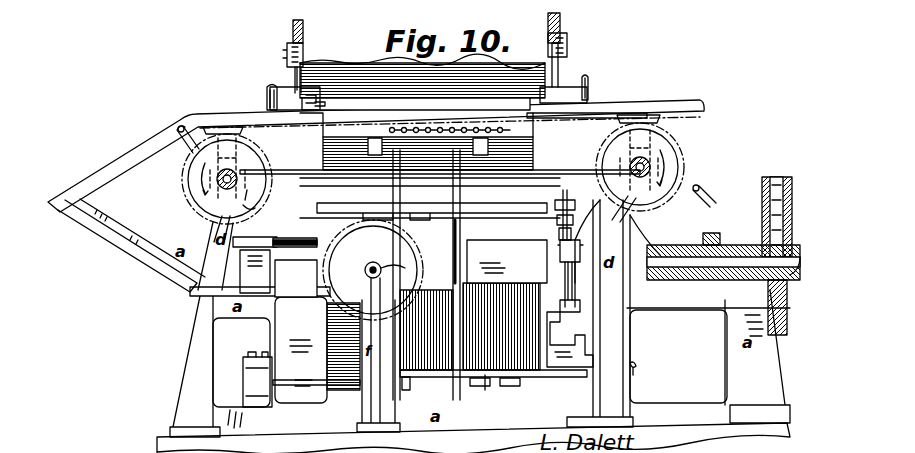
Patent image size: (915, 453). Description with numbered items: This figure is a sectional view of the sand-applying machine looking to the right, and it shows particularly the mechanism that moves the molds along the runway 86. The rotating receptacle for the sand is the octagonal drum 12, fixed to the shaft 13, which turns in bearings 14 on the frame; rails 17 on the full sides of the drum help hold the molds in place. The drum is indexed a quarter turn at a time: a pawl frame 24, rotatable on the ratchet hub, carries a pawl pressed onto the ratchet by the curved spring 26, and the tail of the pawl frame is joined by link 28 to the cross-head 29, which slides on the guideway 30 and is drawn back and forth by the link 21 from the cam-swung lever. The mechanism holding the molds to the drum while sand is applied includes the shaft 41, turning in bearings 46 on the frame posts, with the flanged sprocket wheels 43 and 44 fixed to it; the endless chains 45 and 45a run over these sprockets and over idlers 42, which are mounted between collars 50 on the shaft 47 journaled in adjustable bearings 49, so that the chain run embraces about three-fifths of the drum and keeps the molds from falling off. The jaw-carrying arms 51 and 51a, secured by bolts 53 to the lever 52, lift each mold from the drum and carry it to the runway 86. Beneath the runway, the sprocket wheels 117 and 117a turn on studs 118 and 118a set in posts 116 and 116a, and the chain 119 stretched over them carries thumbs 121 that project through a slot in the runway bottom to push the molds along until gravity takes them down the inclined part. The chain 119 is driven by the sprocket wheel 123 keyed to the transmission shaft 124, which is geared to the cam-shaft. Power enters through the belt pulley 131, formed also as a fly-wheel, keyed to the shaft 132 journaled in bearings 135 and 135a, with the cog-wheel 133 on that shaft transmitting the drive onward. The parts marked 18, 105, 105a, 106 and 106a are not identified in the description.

The drum 12 is at (530, 150).
The shaft 13 is at (295, 260).
The bearings 14 is at (273, 237).
The rails 17 is at (454, 254).
The roller 18 is at (422, 82).
The link 21 is at (578, 298).
The pawl frame 24 is at (562, 203).
The curved spring 26 is at (568, 205).
The link 28 is at (560, 262).
The cross-head 29 is at (561, 302).
The guideway 30 is at (570, 339).
The shaft 41 is at (288, 172).
The idlers 42 is at (470, 407).
The flanged sprocket wheel 43 is at (401, 200).
The flanged sprocket wheel 44 is at (461, 200).
The endless chain 45 is at (356, 249).
The endless chain 45a is at (461, 232).
The bearings 46 is at (610, 150).
The shaft 47 is at (506, 387).
The adjustable bearings 49 is at (246, 378).
The collars 50 is at (485, 388).
The arm 51 is at (294, 88).
The arm 51a is at (549, 30).
The lever 52 is at (304, 33).
The bolts 53 is at (288, 56).
The runway 86 is at (197, 122).
The cylinder 105 is at (266, 97).
The cylinder 105a is at (590, 80).
The block 106 is at (272, 90).
The block 106a is at (578, 88).
The post 116 is at (222, 215).
The post 116a is at (640, 205).
The sprocket wheel 117 is at (190, 181).
The sprocket wheel 117a is at (660, 145).
The stud 118 is at (236, 180).
The stud 118a is at (648, 178).
The chain 119 is at (677, 158).
The thumbs 121 is at (190, 142).
The sprocket wheel 123 is at (348, 264).
The transmission shaft 124 is at (406, 267).
The pulley 131 is at (775, 178).
The shaft 132 is at (803, 258).
The cog-wheel 133 is at (682, 247).
The bearing 135 is at (660, 278).
The bearing 135a is at (735, 240).